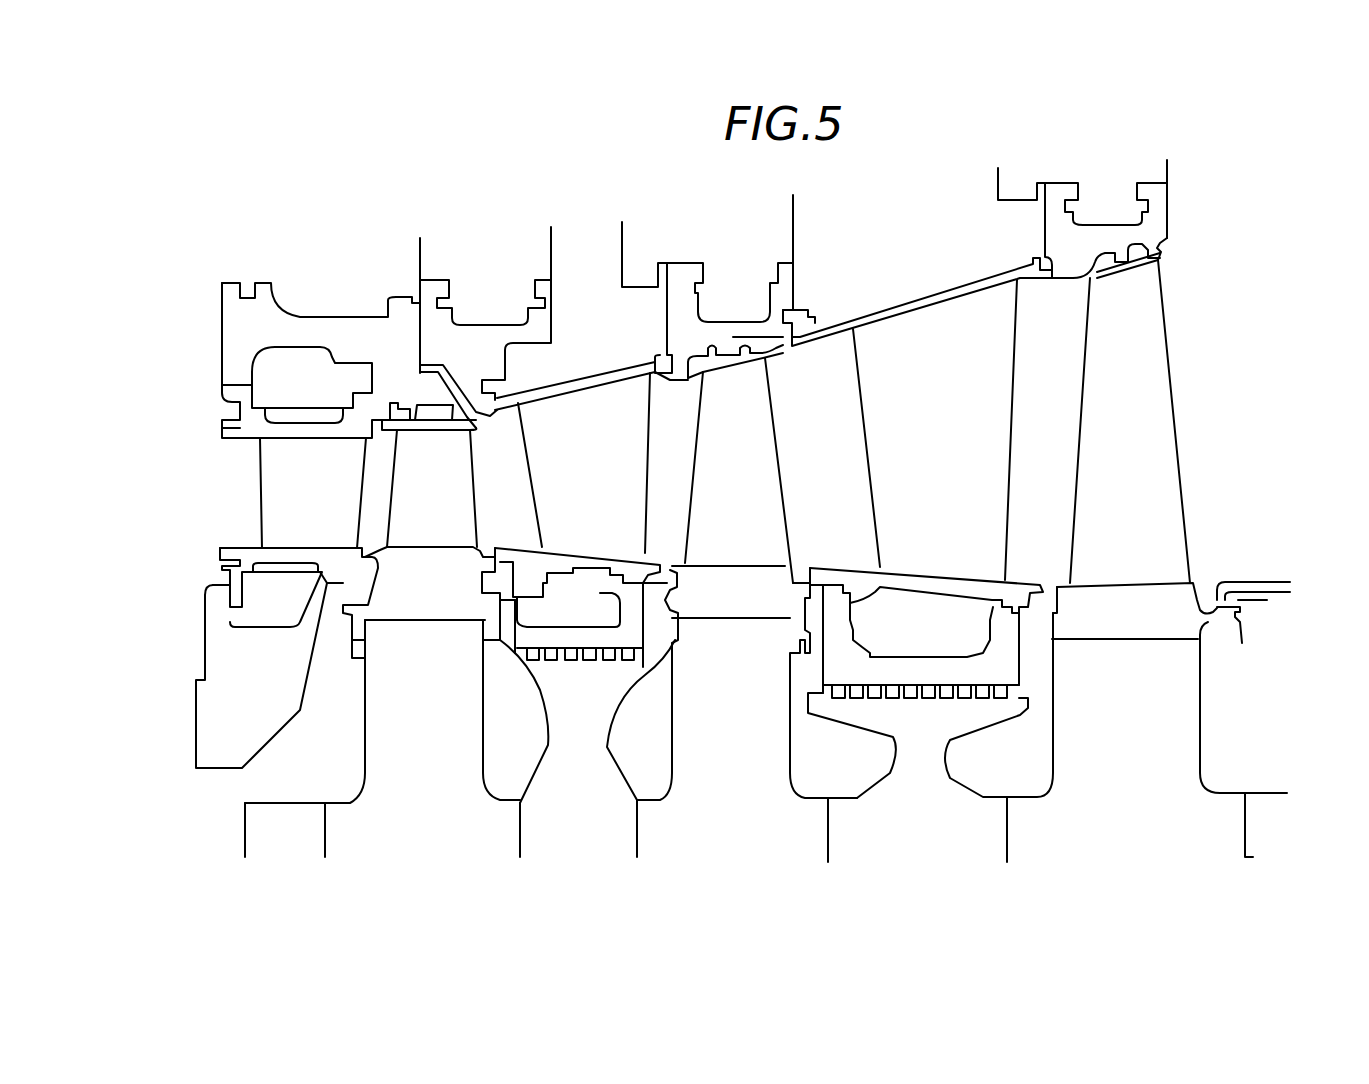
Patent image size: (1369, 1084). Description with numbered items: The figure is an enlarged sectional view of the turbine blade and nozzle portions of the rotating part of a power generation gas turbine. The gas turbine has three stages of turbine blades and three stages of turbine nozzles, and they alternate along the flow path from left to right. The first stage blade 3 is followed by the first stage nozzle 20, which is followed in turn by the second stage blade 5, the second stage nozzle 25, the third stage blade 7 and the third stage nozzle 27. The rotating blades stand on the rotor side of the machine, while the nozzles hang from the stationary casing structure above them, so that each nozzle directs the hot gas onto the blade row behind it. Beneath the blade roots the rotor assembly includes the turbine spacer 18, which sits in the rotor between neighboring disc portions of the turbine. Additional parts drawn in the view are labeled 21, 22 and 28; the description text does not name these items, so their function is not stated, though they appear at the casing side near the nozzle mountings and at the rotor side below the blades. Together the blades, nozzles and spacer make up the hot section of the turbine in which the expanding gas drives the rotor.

The first stage blade 3 is at (427, 610).
The second stage blade 5 is at (780, 483).
The third stage blade 7 is at (1180, 463).
The turbine spacer 18 is at (582, 835).
The first stage nozzle 20 is at (260, 492).
The spacer 21 is at (398, 837).
The seal 22 is at (397, 403).
The second stage nozzle 25 is at (523, 465).
The third stage nozzle 27 is at (867, 520).
The seal ring 28 is at (1213, 615).